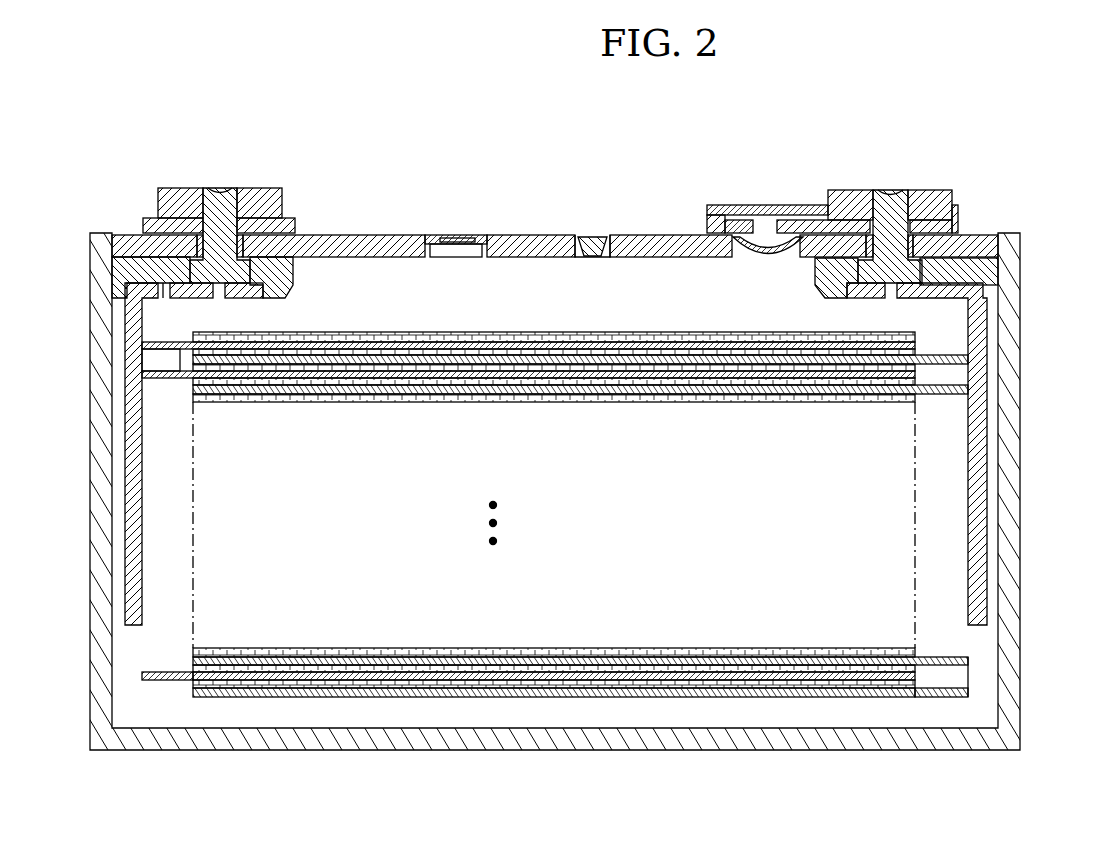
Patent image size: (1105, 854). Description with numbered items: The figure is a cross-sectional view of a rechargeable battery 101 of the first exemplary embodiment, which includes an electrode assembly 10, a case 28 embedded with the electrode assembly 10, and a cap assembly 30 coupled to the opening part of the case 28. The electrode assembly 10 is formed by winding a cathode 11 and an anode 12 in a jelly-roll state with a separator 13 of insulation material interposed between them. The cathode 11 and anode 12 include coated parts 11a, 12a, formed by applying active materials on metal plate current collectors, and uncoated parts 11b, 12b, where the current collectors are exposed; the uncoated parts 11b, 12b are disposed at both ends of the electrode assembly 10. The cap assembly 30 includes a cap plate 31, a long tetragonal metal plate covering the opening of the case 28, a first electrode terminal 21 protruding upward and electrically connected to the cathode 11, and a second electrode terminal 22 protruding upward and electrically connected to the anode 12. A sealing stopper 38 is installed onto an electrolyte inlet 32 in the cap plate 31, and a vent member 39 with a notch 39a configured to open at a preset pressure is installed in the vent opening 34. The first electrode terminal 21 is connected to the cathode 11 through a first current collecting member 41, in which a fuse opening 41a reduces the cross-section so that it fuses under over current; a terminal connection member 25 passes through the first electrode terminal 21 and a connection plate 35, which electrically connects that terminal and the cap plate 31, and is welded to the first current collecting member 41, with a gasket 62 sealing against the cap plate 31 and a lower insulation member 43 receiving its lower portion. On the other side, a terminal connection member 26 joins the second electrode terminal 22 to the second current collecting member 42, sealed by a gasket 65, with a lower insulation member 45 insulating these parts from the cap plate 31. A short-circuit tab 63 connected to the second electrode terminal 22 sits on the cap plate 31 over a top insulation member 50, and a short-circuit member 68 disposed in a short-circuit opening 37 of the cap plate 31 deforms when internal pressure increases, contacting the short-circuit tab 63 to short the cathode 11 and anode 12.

The rechargeable battery 101 is at (527, 111).
The electrode assembly 10 is at (706, 696).
The cathode 11 is at (302, 805).
The coated part 11a is at (283, 681).
The uncoated part 11b is at (160, 681).
The anode 12 is at (797, 805).
The coated part 12a is at (812, 698).
The uncoated part 12b is at (945, 698).
The separator 13 is at (495, 690).
The first electrode terminal 21 is at (180, 197).
The second electrode terminal 22 is at (927, 200).
The terminal connection member 25 is at (222, 210).
The terminal connection member 26 is at (888, 205).
The case 28 is at (1012, 540).
The cap assembly 30 is at (527, 231).
The cap plate 31 is at (398, 248).
The electrolyte inlet 32 is at (592, 257).
The vent opening 34 is at (470, 253).
The connection plate 35 is at (290, 222).
The short-circuit opening 37 is at (815, 262).
The sealing stopper 38 is at (585, 240).
The vent member 39 is at (480, 240).
The notch 39a is at (450, 238).
The first current collecting member 41 is at (130, 400).
The fuse opening 41a is at (163, 294).
The second current collecting member 42 is at (977, 430).
The lower insulation member 43 is at (128, 271).
The lower insulation member 45 is at (978, 272).
The top insulation member 50 is at (960, 232).
The gasket 62 is at (196, 248).
The short-circuit tab 63 is at (745, 232).
The gasket 65 is at (950, 250).
The short-circuit member 68 is at (742, 250).